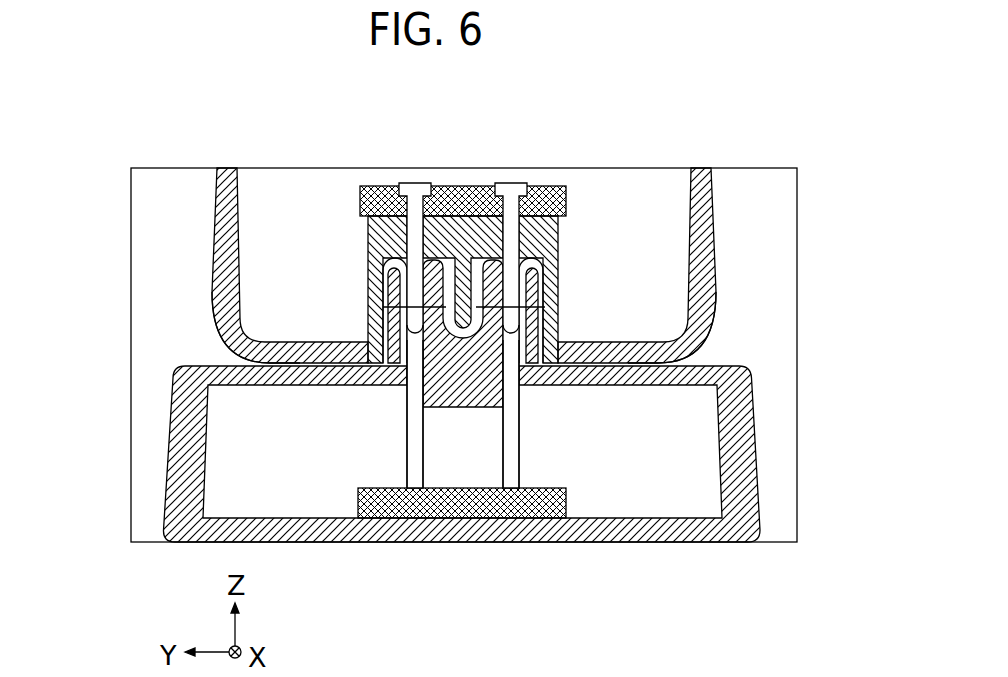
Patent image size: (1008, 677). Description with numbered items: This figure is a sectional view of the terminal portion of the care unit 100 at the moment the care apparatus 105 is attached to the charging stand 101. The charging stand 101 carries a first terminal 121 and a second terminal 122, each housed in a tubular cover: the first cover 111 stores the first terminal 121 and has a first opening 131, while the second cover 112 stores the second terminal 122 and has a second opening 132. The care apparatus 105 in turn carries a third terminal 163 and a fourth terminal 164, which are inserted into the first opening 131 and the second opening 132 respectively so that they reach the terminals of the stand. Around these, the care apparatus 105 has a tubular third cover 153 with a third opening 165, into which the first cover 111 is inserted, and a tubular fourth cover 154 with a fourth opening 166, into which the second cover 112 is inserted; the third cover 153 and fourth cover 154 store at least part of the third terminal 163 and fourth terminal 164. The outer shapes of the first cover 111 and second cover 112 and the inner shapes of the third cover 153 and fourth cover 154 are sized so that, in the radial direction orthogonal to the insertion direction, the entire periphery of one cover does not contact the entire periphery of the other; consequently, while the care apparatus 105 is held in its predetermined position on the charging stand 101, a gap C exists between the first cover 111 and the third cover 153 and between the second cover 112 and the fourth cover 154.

The care unit 100 is at (683, 132).
The charging stand 101 is at (170, 420).
The care apparatus 105 is at (214, 233).
The first cover 111 is at (395, 352).
The second cover 112 is at (530, 352).
The first terminal 121 is at (415, 412).
The second terminal 122 is at (514, 412).
The first opening 131 is at (370, 250).
The second opening 132 is at (558, 250).
The third cover 153 is at (370, 293).
The fourth cover 154 is at (558, 293).
The third terminal 163 is at (415, 235).
The fourth terminal 164 is at (511, 235).
The third opening 165 is at (300, 363).
The fourth opening 166 is at (640, 353).
The gap C is at (383, 306).